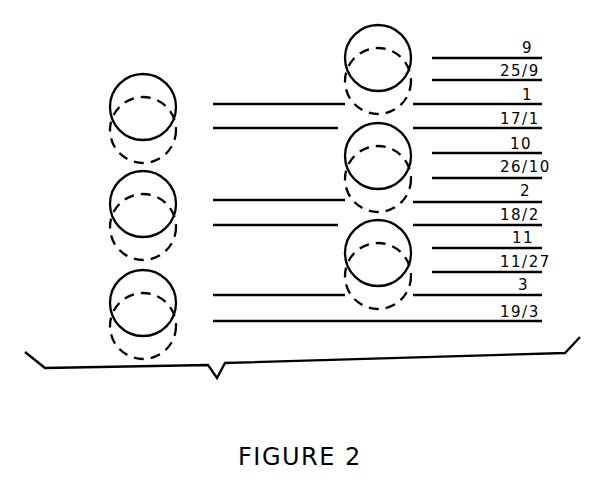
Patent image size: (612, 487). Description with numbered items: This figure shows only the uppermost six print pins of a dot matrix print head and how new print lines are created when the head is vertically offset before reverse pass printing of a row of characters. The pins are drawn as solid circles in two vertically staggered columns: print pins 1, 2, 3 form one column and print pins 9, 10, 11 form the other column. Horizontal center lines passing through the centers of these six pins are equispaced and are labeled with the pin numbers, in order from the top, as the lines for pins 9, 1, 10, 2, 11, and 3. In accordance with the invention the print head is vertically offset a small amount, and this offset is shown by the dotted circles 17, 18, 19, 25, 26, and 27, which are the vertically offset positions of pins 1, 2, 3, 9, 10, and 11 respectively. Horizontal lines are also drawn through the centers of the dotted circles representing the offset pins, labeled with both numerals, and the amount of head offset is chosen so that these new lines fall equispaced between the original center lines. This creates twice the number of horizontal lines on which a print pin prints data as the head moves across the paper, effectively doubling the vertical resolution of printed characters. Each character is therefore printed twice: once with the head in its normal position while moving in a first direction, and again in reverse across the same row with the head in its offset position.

The print pin 1 is at (105, 91).
The print pin 2 is at (105, 189).
The print pin 3 is at (105, 285).
The print pin 9 is at (338, 40).
The print pin 10 is at (338, 145).
The print pin 11 is at (338, 247).
The vertically offset pin 17 is at (105, 124).
The vertically offset pin 18 is at (105, 222).
The vertically offset pin 19 is at (105, 315).
The vertically offset pin 25 is at (338, 73).
The vertically offset pin 26 is at (338, 174).
The vertically offset pin 27 is at (338, 275).